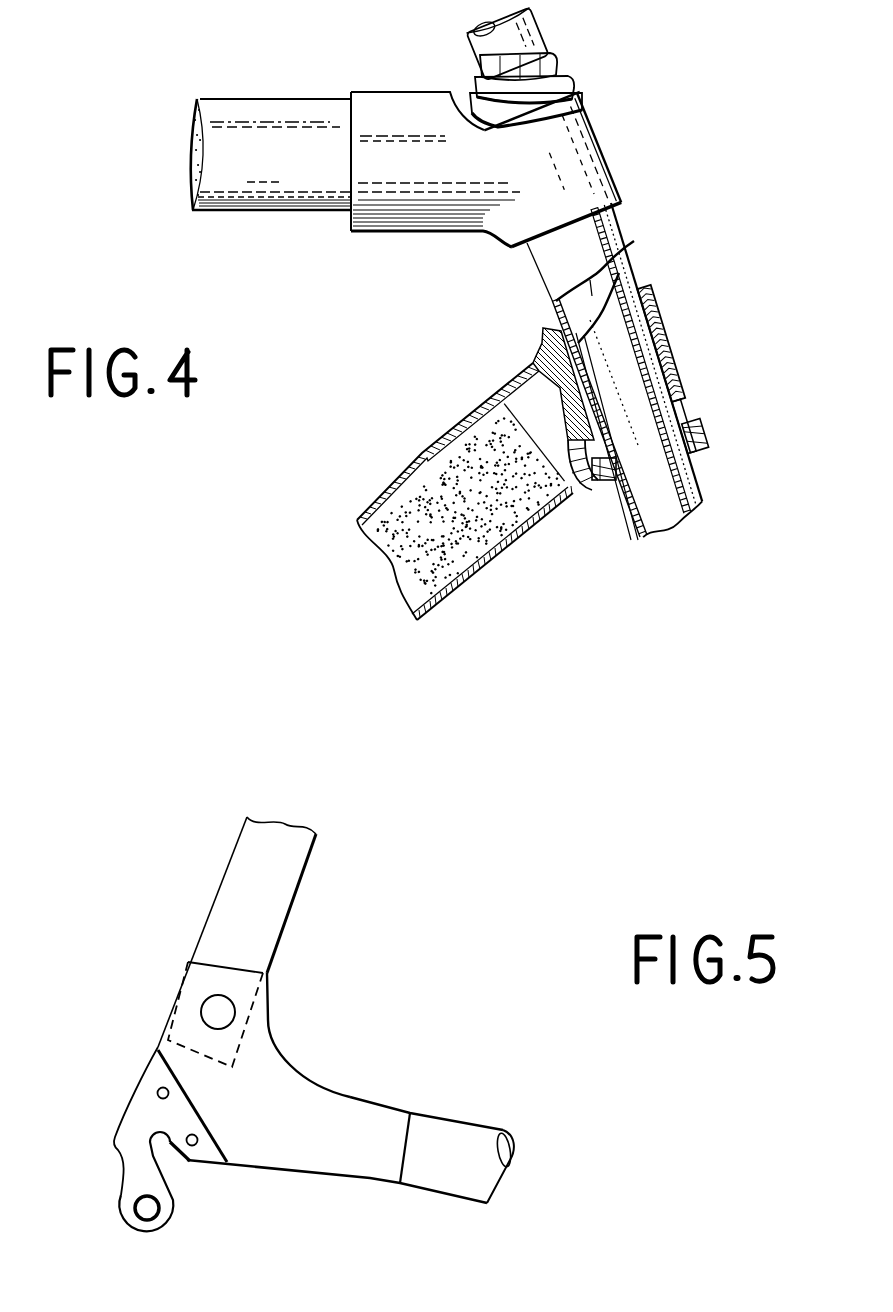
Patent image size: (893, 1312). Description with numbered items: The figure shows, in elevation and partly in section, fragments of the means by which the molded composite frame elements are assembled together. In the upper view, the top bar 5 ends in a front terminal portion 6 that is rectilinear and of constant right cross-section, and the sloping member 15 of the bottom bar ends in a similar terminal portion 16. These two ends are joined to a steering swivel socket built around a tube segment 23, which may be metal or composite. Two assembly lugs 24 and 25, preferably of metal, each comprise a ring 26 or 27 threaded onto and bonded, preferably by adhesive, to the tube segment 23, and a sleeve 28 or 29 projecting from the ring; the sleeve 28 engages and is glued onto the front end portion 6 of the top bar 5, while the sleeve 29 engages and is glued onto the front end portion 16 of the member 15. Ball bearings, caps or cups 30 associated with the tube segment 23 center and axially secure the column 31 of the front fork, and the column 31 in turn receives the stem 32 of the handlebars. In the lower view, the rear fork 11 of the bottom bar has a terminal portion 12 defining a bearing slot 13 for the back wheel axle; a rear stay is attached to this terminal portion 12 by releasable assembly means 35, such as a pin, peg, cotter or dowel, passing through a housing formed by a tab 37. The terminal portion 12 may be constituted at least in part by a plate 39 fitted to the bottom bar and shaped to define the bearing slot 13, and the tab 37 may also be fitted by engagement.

In FIG. 4, the top bar 5 is at (223, 212).
In FIG. 4, the front terminal portion 6 is at (285, 113).
In FIG. 4, the sleeve 28 is at (407, 190).
In FIG. 4, the assembly lug 24 is at (437, 231).
In FIG. 4, the ring 26 is at (590, 160).
In FIG. 4, the cups 30 is at (566, 71).
In FIG. 4, the stem 32 is at (531, 34).
In FIG. 4, the tube segment 23 is at (588, 231).
In FIG. 4, the column 31 is at (602, 283).
In FIG. 4, the ring 27 is at (667, 341).
In FIG. 4, the assembly lug 25 is at (563, 514).
In FIG. 4, the sleeve 29 is at (548, 542).
In FIG. 4, the terminal portion 16 is at (474, 430).
In FIG. 4, the sloping member 15 is at (391, 579).
In FIG. 5, the releasable assembly means 35 is at (208, 1008).
In FIG. 5, the tab 37 is at (269, 1015).
In FIG. 5, the terminal portion 12 is at (357, 1102).
In FIG. 5, the rear fork 11 is at (428, 1194).
In FIG. 5, the plate 39 is at (131, 1111).
In FIG. 5, the bearing slot 13 is at (155, 1150).